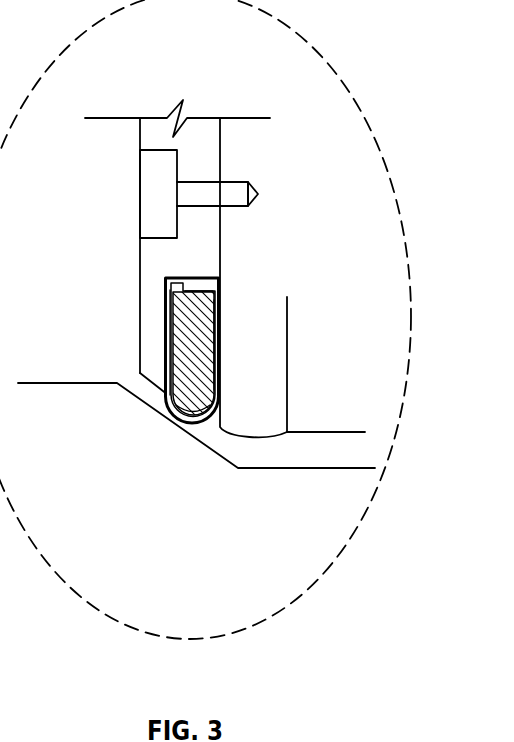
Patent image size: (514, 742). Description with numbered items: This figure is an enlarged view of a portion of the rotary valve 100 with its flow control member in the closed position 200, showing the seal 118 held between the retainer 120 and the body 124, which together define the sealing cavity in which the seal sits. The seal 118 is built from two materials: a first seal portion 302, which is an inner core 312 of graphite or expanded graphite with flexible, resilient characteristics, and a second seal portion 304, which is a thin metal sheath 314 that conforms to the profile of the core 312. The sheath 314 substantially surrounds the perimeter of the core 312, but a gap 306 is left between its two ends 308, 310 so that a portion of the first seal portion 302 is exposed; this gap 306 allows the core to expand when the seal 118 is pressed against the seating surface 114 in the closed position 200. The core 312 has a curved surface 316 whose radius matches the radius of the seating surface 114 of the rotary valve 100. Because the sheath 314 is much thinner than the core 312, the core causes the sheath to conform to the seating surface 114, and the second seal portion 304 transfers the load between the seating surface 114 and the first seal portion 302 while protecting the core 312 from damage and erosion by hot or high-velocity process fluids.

The rotary valve 100 is at (222, 98).
The closed position 200 is at (205, 319).
The seating surface 114 is at (203, 447).
The seal 118 is at (183, 337).
The retainer 120 is at (138, 260).
The body 124 is at (274, 400).
The first seal portion 302 is at (210, 296).
The second seal portion 304 is at (163, 395).
The gap 306 is at (200, 291).
The end of second seal portion 308 is at (168, 279).
The end of second seal portion 310 is at (204, 283).
The core 312 is at (213, 337).
The sheath 314 is at (166, 330).
The curved surface 316 is at (188, 413).